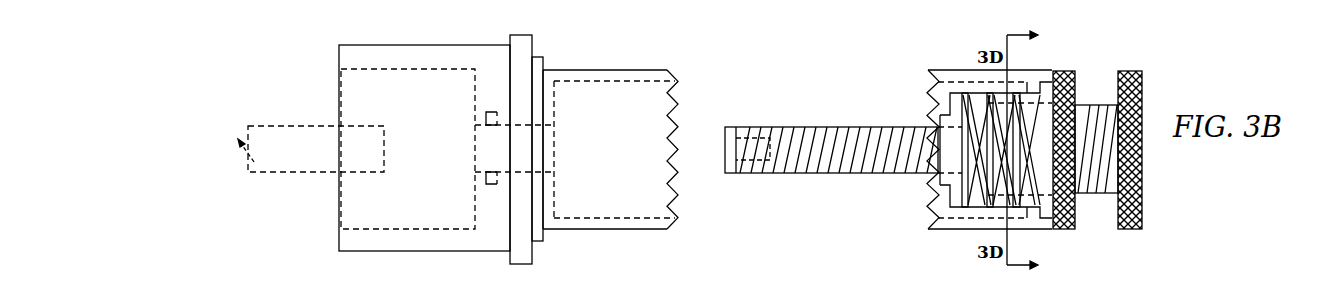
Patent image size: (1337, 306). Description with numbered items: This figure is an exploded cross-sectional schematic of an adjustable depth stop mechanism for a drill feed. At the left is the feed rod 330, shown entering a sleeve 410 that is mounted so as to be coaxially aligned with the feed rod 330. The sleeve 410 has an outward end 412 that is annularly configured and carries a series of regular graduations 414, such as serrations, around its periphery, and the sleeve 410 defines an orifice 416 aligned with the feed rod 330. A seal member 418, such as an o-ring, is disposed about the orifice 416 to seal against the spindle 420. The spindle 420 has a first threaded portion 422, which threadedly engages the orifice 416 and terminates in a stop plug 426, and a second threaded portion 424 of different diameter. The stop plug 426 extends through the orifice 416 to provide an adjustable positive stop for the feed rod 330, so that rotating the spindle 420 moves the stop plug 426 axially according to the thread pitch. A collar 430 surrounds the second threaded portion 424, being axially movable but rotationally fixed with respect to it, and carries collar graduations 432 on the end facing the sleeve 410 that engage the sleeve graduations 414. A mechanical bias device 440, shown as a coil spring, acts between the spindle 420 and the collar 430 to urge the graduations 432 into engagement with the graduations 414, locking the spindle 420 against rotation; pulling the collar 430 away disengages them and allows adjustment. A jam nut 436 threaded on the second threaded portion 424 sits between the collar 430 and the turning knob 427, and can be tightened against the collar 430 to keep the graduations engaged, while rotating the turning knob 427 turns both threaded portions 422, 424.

The feed rod 330 is at (298, 155).
The sleeve 410 is at (520, 252).
The end of the sleeve 412 is at (632, 69).
The graduations 414 is at (685, 114).
The orifice 416 is at (553, 145).
The seal member 418 is at (491, 112).
The spindle 420 is at (808, 177).
The first threaded portion 422 is at (781, 140).
The second threaded portion 424 is at (1088, 105).
The stop plug 426 is at (727, 150).
The turning knob 427 is at (1128, 229).
The collar 430 is at (955, 230).
The collar graduations 432 is at (917, 190).
The jam nut 436 is at (1060, 72).
The mechanical bias device 440 is at (984, 93).